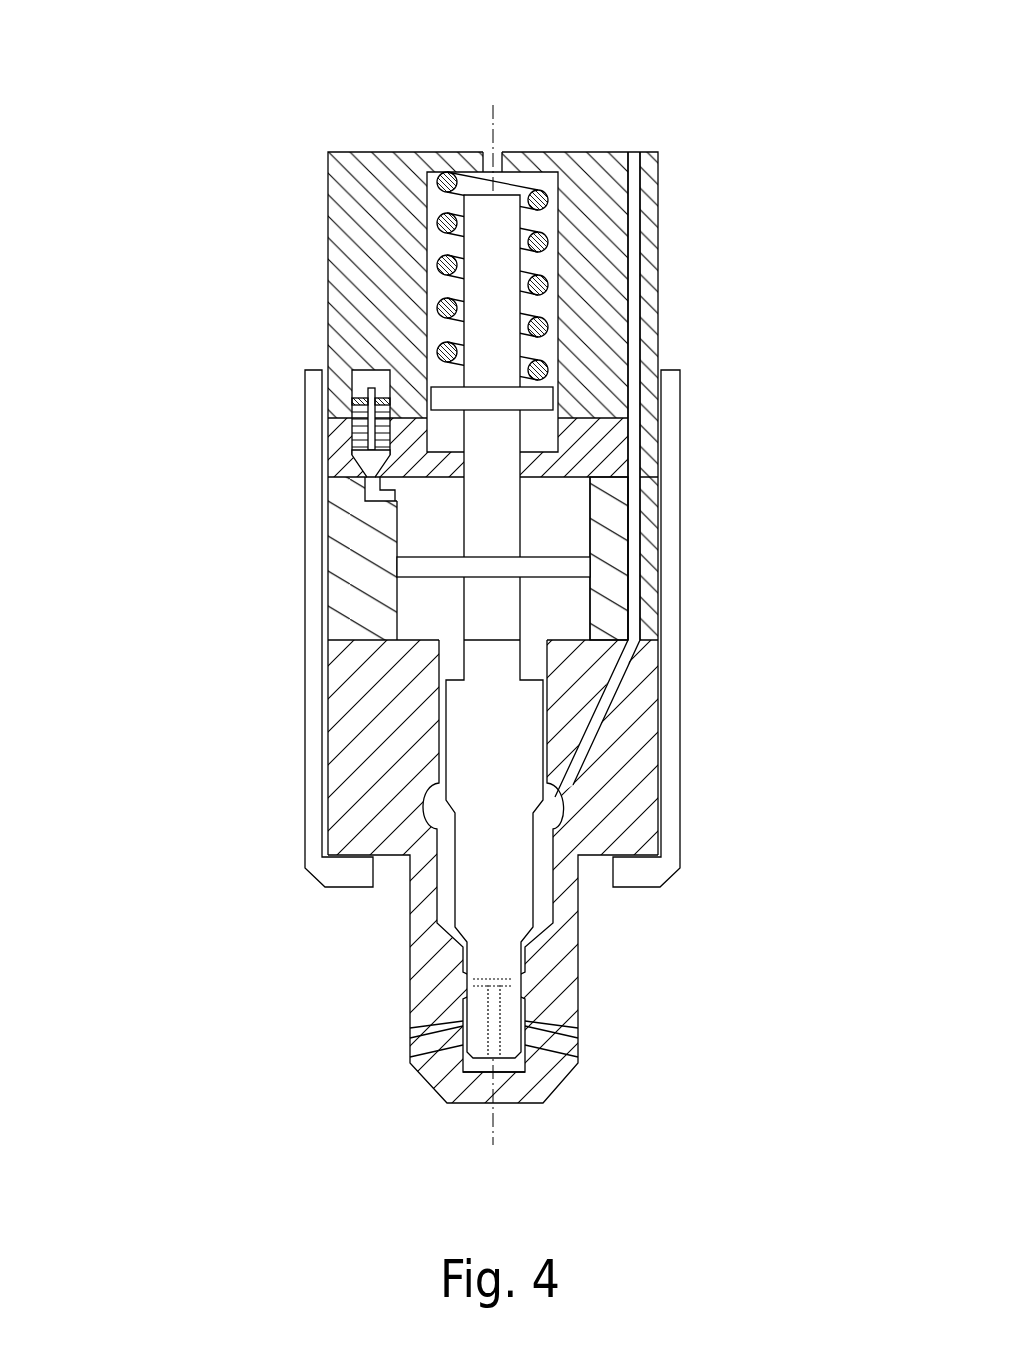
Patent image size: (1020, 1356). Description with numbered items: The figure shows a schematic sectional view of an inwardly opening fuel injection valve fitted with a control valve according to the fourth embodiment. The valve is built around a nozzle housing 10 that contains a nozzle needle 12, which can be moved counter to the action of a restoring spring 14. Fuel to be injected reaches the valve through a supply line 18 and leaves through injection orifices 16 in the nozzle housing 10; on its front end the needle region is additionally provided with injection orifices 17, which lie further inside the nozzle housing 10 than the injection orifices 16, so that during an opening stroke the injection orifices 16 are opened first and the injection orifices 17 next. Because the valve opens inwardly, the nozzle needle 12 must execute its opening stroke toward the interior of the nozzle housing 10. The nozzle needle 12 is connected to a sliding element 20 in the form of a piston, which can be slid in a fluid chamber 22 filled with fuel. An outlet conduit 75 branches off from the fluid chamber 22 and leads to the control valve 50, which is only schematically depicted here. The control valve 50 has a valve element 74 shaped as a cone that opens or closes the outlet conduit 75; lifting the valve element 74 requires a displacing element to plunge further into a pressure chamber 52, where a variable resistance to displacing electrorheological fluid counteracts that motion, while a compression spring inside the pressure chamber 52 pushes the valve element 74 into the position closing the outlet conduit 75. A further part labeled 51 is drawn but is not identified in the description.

The nozzle housing 10 is at (535, 973).
The nozzle needle 12 is at (480, 887).
The restoring spring 14 is at (547, 283).
The injection orifices 16 is at (578, 1053).
The injection orifices 17 is at (570, 1030).
The supply line 18 is at (633, 157).
The sliding element 20 is at (420, 567).
The fluid chamber 22 is at (562, 520).
The control valve 50 is at (243, 425).
The injector housing 51 is at (365, 217).
The pressure chamber 52 is at (358, 383).
The valve element 74 is at (355, 458).
The outlet conduit 75 is at (370, 503).